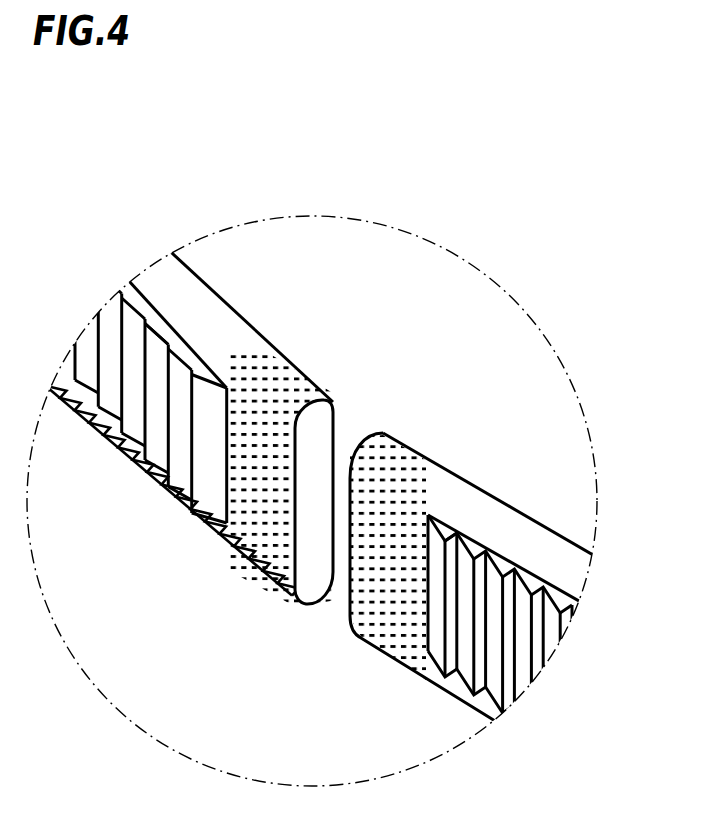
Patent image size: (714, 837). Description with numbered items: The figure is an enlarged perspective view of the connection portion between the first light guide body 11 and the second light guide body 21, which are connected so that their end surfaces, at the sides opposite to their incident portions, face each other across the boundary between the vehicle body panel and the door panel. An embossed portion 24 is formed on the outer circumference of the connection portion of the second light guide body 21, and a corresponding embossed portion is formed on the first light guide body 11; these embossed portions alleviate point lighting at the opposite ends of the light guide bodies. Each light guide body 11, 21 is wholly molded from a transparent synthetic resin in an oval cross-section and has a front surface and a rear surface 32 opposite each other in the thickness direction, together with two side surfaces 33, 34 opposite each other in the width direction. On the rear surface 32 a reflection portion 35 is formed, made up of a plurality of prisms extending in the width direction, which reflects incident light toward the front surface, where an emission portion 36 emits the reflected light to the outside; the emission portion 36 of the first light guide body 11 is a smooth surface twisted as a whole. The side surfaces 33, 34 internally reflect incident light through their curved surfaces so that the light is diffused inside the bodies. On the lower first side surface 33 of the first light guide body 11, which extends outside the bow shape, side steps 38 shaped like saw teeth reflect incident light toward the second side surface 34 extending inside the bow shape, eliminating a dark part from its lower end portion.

The first light guide body 11 is at (277, 348).
The second light guide body 21 is at (473, 467).
The embossed portion 24 is at (402, 468).
The rear surface 32 is at (103, 428).
The first side surface 33 is at (378, 655).
The second side surface 34 is at (215, 323).
The reflection portion 35 is at (157, 455).
The emission portion 36 is at (342, 415).
The side steps 38 is at (200, 537).